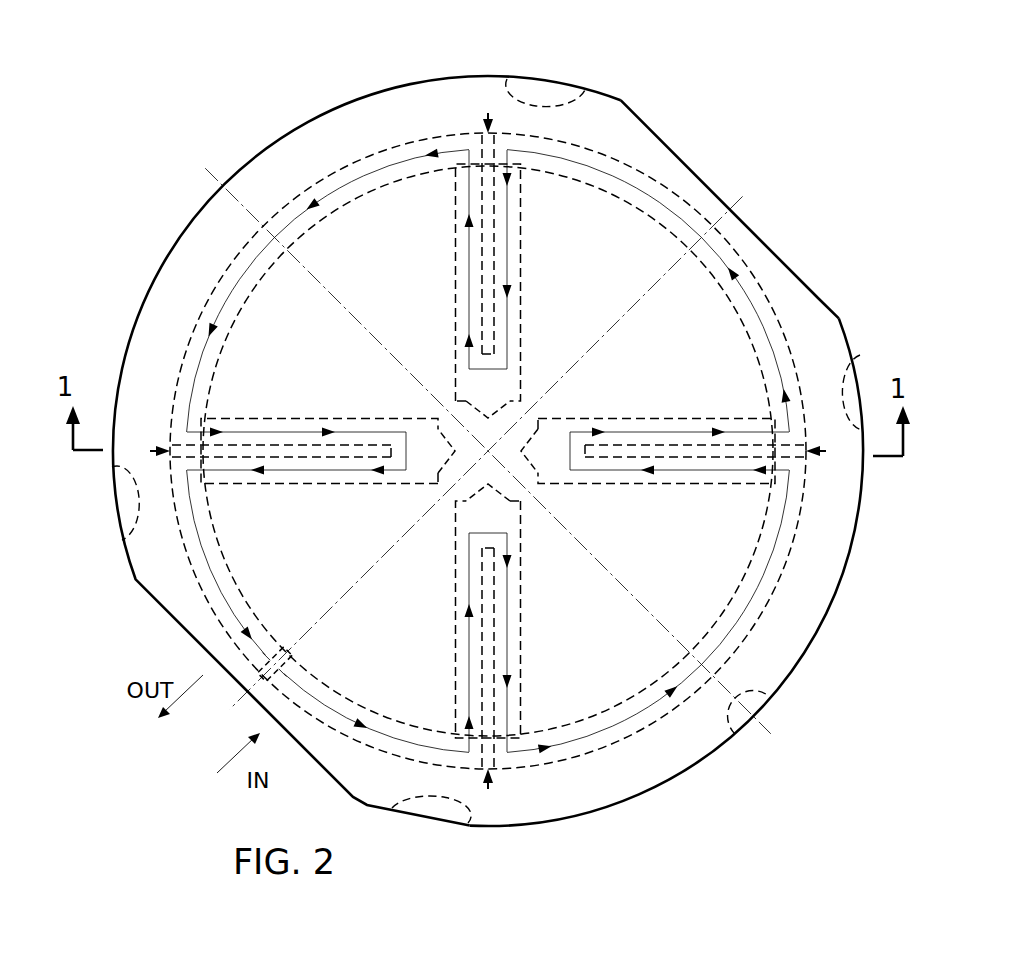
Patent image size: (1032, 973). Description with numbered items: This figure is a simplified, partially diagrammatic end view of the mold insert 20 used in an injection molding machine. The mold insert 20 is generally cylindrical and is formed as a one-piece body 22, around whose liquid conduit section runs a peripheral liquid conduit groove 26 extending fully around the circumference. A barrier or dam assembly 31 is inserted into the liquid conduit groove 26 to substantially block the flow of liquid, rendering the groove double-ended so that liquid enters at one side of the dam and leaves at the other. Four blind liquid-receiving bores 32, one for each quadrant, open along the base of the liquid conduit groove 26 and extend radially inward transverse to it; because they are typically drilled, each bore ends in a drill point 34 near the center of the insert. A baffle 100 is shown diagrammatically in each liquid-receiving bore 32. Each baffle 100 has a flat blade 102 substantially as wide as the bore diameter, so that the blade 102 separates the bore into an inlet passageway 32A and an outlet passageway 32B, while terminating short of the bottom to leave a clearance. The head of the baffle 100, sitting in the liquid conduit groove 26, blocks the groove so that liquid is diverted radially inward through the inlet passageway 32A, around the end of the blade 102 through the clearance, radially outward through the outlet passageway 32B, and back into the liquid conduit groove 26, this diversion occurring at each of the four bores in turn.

The mold insert 20 is at (501, 451).
The one-piece body 22 is at (805, 310).
The liquid conduit groove 26 is at (828, 612).
The dam assembly 31 is at (253, 690).
The liquid-receiving bore 32 is at (521, 250).
The inlet passageway 32A is at (519, 300).
The outlet passageway 32B is at (463, 307).
The drill point 34 is at (496, 404).
The baffle 100 is at (491, 120).
The blade 102 is at (495, 212).